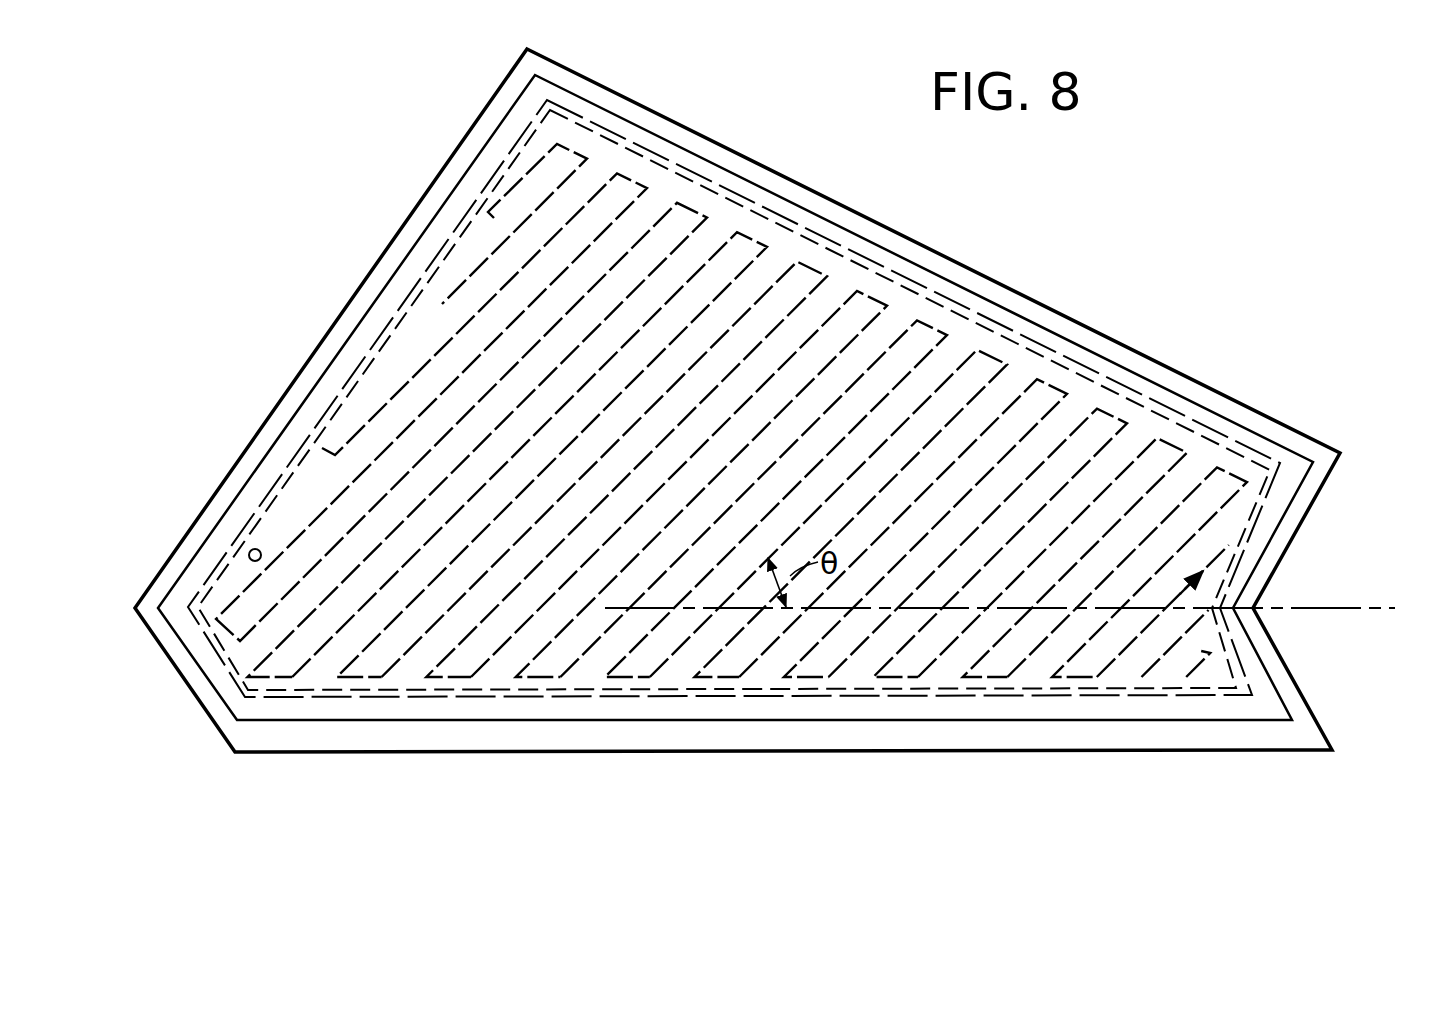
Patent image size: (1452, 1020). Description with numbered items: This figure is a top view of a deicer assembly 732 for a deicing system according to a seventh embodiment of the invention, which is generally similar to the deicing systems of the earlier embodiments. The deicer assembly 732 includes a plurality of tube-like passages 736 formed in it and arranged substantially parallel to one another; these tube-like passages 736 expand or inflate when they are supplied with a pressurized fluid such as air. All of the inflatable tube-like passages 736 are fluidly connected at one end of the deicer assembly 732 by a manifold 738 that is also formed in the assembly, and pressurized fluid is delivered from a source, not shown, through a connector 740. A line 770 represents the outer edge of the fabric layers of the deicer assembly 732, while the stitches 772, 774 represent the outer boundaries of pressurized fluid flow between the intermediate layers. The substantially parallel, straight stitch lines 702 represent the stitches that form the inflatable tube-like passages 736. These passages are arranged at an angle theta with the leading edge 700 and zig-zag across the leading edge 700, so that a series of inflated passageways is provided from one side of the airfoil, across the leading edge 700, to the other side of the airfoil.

The leading edge 700 is at (1320, 608).
The stitch lines 702 is at (671, 483).
The deicer assembly 732 is at (744, 154).
The tube-like passages 736 is at (880, 304).
The manifold 738 is at (289, 524).
The connector 740 is at (249, 552).
The line 770 is at (883, 722).
The stitches 772 is at (605, 691).
The stitches 774 is at (718, 698).